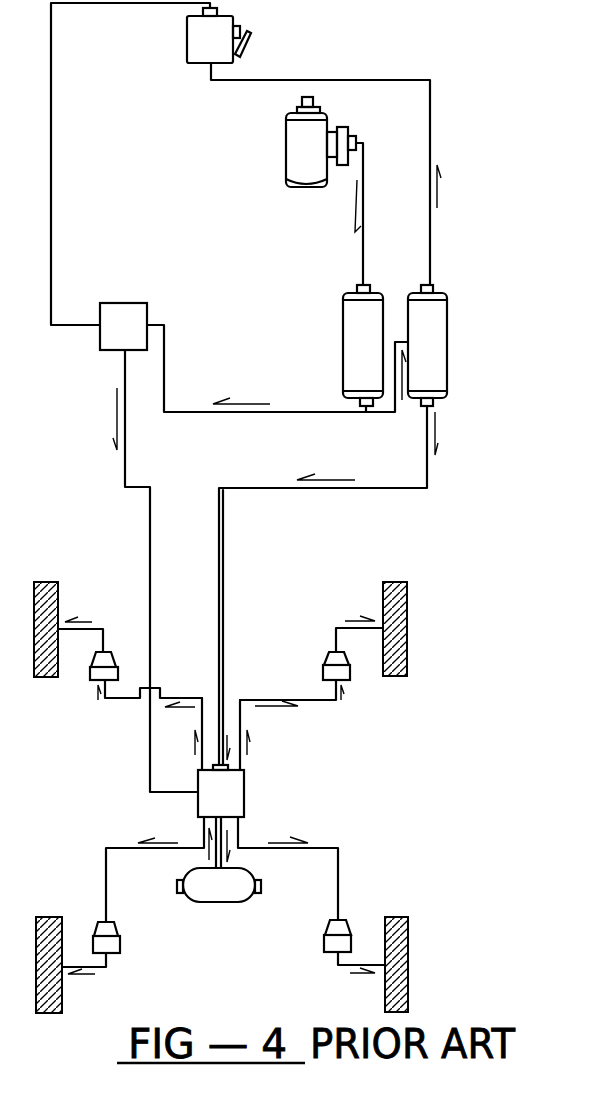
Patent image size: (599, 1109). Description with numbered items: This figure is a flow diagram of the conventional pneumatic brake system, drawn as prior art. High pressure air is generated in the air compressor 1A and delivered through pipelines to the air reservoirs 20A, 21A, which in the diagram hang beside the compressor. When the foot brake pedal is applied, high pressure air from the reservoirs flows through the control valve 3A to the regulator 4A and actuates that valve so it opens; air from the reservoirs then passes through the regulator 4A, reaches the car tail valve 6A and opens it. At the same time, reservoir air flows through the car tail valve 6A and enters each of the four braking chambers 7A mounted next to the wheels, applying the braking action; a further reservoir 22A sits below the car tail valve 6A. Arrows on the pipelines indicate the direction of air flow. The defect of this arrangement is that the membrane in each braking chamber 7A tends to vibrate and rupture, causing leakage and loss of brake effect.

The compressor 1A is at (321, 142).
The brake valve 3A is at (219, 35).
The relay valve 4A is at (123, 326).
The brake control valve 6A is at (221, 791).
The brake cylinder 7A is at (220, 801).
The air reservoir 20A is at (363, 345).
The air reservoir 21A is at (427, 345).
The auxiliary reservoir 22A is at (219, 885).